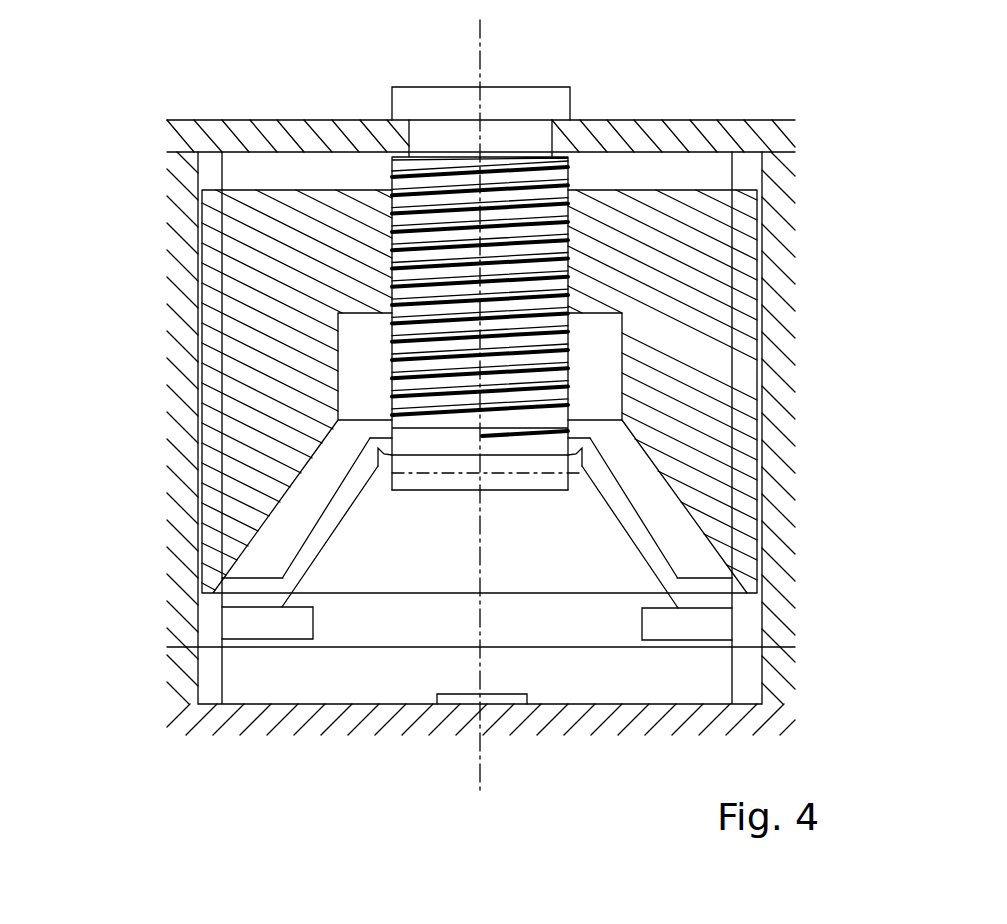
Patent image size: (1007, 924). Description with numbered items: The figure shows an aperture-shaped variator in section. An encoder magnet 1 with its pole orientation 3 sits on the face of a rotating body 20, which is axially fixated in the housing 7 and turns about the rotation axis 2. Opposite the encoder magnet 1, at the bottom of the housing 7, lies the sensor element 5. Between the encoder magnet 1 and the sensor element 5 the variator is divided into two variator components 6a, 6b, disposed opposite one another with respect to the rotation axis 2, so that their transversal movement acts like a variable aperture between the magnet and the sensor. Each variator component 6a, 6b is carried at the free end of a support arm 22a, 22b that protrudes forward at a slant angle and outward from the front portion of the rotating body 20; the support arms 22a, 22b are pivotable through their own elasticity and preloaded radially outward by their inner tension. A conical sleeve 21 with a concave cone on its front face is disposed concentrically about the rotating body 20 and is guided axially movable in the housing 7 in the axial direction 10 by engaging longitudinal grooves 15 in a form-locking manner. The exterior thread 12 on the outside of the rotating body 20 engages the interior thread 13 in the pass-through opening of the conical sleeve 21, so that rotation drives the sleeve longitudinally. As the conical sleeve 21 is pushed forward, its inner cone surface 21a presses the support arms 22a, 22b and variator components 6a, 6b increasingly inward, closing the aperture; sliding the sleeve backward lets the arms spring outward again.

The encoder magnet 1 is at (392, 473).
The rotation axis 2 is at (567, 402).
The axial direction 10 is at (482, 58).
The rotating body 20 is at (415, 87).
The housing 7 is at (298, 122).
The exterior thread 12 is at (577, 282).
The interior thread 13 is at (570, 183).
The conical sleeve 21 is at (670, 192).
The inner cone surface 21a is at (723, 557).
The longitudinal groove 15 is at (763, 172).
The pole orientation 3 is at (577, 470).
The support arm 22a is at (638, 537).
The support arm 22b is at (290, 566).
The variator component 6a is at (687, 622).
The variator component 6b is at (242, 613).
The sensor element 5 is at (515, 697).